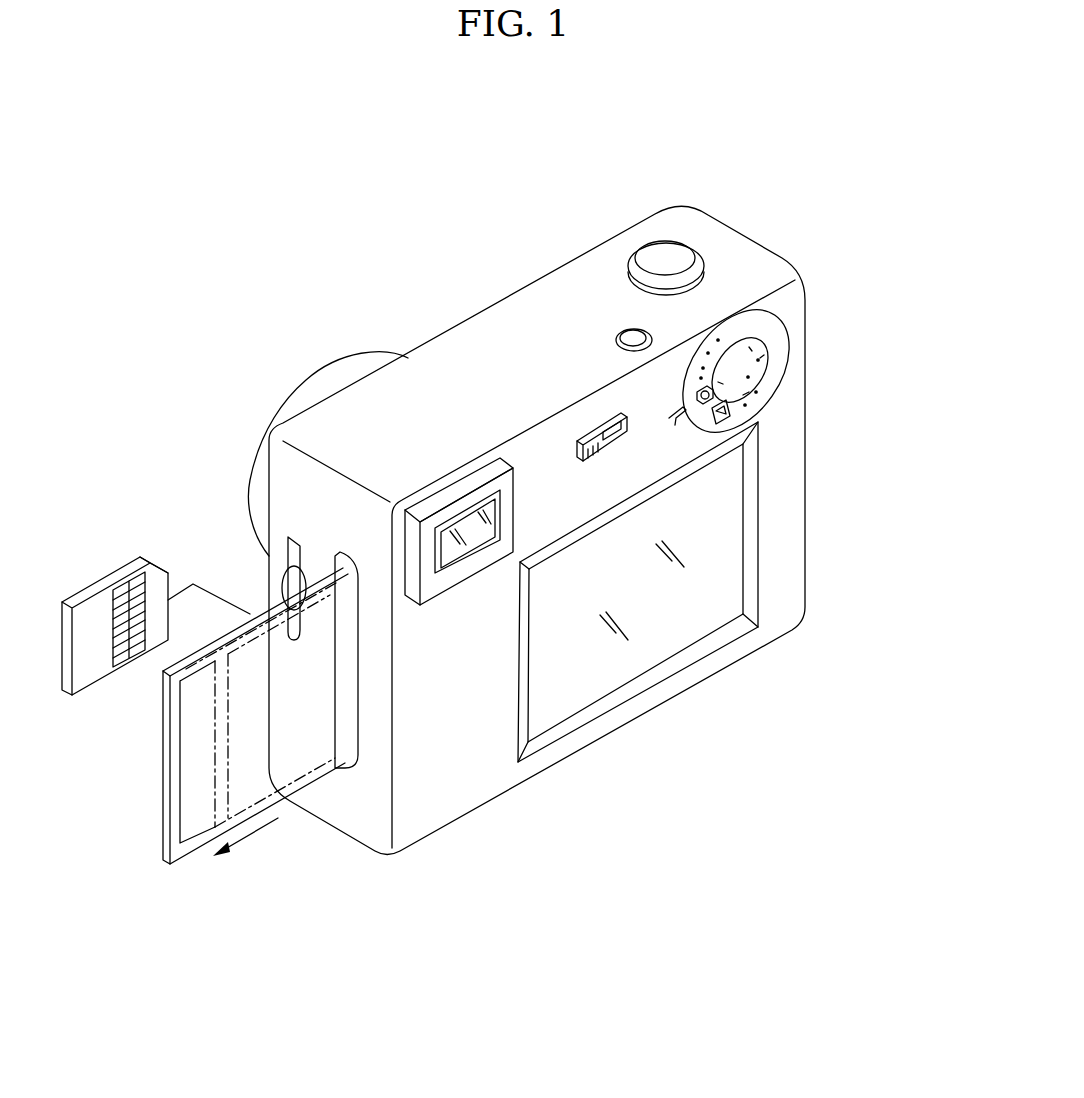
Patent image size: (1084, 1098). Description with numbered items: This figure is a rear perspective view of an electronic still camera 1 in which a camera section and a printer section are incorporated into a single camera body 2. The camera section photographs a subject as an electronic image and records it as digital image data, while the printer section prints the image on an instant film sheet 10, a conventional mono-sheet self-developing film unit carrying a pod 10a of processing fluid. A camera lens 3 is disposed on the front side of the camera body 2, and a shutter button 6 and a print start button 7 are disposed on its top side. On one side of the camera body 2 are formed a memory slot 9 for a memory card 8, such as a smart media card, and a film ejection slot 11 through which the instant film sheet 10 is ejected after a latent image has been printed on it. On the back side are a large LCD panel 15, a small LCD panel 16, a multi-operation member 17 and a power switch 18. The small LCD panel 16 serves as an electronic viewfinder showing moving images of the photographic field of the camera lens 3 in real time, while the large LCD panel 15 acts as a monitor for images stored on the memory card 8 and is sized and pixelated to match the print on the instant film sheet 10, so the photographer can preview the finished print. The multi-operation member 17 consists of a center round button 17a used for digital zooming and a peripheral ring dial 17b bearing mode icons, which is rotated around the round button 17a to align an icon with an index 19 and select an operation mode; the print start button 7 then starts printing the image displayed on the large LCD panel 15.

The electronic still camera 1 is at (453, 288).
The camera body 2 is at (775, 648).
The camera lens 3 is at (308, 368).
The shutter button 6 is at (668, 255).
The print start button 7 is at (632, 336).
The memory card 8 is at (97, 577).
The memory slot 9 is at (290, 582).
The instant film sheet 10 is at (203, 766).
The pod 10a is at (193, 776).
The film ejection slot 11 is at (345, 660).
The large LCD panel 15 is at (600, 680).
The small LCD panel 16 is at (478, 545).
The multi-operation member 17 is at (797, 371).
The center round button 17a is at (745, 368).
The peripheral ring dial 17b is at (753, 403).
The power switch 18 is at (597, 432).
The index 19 is at (674, 422).